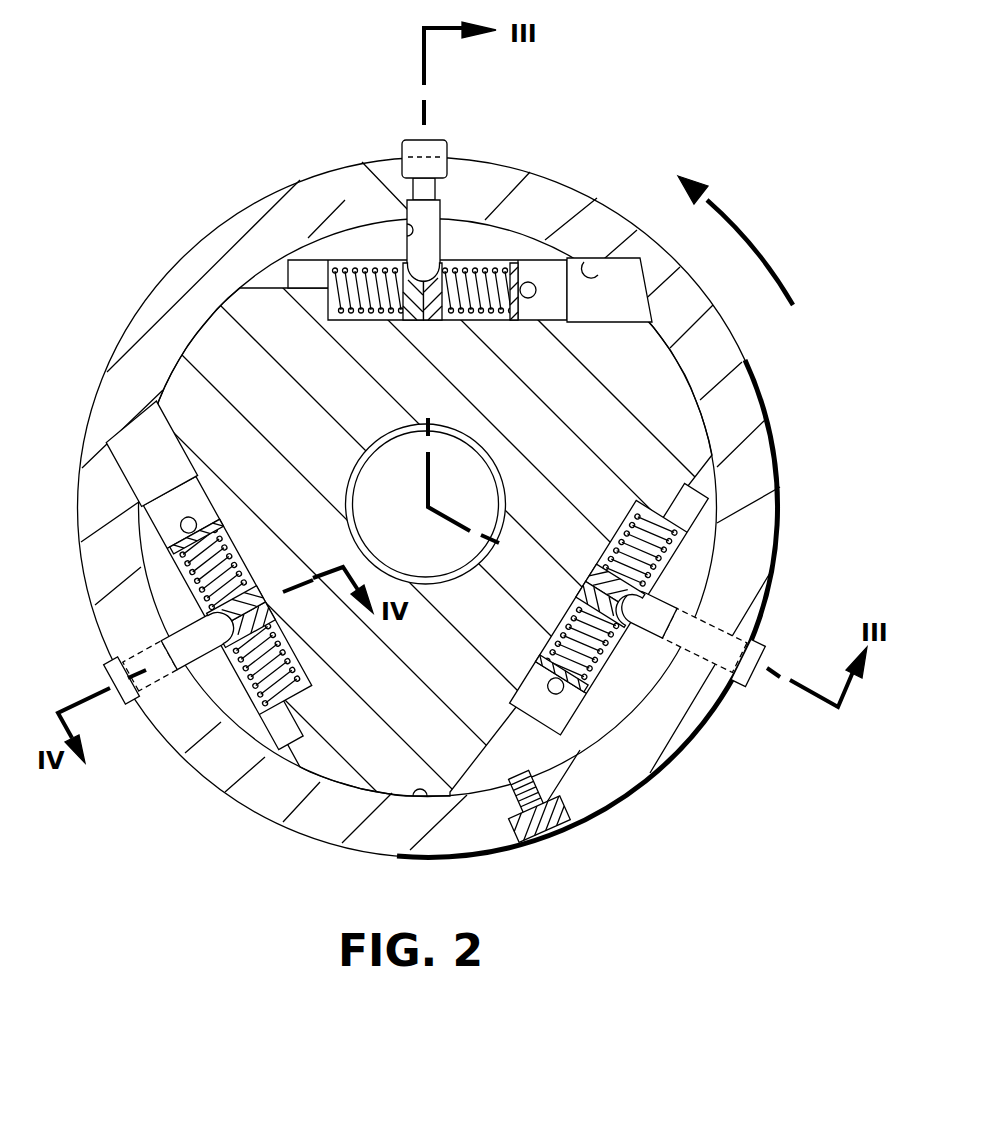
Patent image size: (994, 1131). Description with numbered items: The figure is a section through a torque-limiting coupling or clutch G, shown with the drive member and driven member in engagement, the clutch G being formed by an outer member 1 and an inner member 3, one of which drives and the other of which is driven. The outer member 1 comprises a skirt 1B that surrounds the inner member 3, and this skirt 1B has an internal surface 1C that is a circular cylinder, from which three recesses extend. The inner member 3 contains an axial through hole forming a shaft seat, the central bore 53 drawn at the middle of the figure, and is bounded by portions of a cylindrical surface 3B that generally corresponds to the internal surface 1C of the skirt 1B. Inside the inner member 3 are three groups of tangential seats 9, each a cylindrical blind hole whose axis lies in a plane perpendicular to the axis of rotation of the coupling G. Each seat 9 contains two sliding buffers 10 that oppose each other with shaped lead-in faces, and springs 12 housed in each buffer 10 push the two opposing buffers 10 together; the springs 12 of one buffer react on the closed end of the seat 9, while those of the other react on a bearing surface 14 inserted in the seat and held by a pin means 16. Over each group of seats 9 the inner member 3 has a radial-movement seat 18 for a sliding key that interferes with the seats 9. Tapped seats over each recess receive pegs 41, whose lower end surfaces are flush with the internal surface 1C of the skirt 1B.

The outer member 1 is at (772, 372).
The skirt 1B is at (640, 752).
The internal surface 1C is at (586, 262).
The inner member 3 is at (700, 432).
The cylindrical surface 3B is at (205, 322).
The tangential seats 9 is at (548, 291).
The sliding buffers 10 is at (407, 318).
The springs 12 is at (187, 567).
The bearing surface 14 is at (520, 262).
The pin means 16 is at (170, 494).
The radial-movement seat 18 is at (410, 232).
The pegs 41 is at (410, 140).
The center bore 53 is at (468, 460).
The torque-limiting coupling or clutch G is at (185, 200).